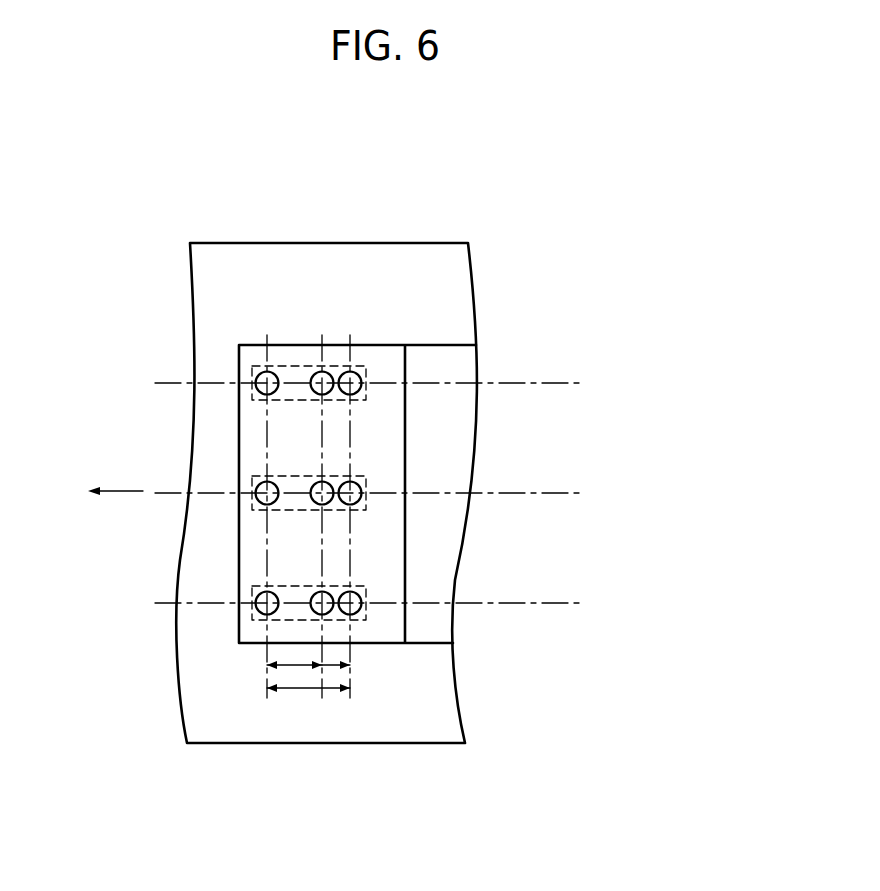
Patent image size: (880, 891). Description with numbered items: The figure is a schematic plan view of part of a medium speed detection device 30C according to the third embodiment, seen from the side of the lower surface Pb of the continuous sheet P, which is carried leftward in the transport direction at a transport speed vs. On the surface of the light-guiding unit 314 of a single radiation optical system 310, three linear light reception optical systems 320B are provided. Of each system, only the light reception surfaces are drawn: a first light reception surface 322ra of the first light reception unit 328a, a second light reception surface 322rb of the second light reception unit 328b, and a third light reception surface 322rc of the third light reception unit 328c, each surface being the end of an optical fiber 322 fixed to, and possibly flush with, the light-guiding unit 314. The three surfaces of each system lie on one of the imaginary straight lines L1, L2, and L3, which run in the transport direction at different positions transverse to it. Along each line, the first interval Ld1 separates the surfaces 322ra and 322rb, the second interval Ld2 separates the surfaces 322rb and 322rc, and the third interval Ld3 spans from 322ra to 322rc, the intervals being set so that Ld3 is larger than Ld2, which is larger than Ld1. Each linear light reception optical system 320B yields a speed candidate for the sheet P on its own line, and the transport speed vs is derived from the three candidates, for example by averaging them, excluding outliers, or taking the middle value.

The medium speed detection device 30C is at (666, 259).
The continuous sheet P is at (416, 243).
The lower surface Pb is at (463, 297).
The light-guiding unit 314 is at (435, 345).
The radiation optical system 310 is at (357, 494).
The linear light reception optical system 320B is at (492, 593).
The first light reception unit 328a is at (368, 266).
The second light reception unit 328b is at (289, 266).
The third light reception unit 328c is at (222, 266).
The optical fiber 322 is at (297, 444).
The first light reception surface 322ra is at (355, 373).
The second light reception surface 322rb is at (316, 373).
The third light reception surface 322rc is at (260, 374).
The imaginary straight line L1 is at (387, 385).
The imaginary straight line L2 is at (387, 495).
The imaginary straight line L3 is at (387, 605).
The first interval Ld1 is at (329, 667).
The second interval Ld2 is at (275, 667).
The third interval Ld3 is at (308, 702).
The transport speed vs is at (83, 475).